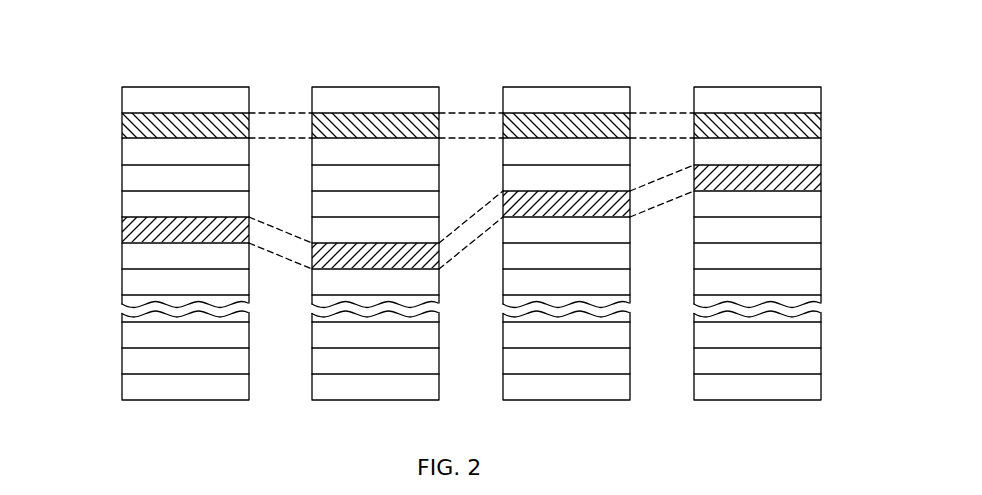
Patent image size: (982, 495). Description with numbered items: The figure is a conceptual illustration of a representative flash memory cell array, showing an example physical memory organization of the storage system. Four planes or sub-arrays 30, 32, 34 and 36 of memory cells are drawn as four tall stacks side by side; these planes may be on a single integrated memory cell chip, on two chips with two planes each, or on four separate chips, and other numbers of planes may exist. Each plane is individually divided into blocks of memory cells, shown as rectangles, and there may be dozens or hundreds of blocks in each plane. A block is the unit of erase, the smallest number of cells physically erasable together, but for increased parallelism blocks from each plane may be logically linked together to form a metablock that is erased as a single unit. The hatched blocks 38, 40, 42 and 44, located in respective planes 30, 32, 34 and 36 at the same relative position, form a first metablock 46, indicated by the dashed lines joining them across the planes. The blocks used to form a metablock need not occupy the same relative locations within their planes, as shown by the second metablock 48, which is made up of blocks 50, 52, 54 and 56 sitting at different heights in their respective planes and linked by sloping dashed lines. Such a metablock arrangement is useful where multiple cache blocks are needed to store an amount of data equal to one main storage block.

The plane 30 is at (183, 80).
The plane 32 is at (378, 80).
The plane 34 is at (567, 82).
The plane 36 is at (793, 88).
The block 38 is at (153, 125).
The block 40 is at (355, 130).
The block 42 is at (547, 130).
The block 44 is at (787, 127).
The first metablock 46 is at (662, 112).
The second metablock 48 is at (665, 177).
The block 50 is at (160, 230).
The block 52 is at (345, 260).
The block 54 is at (555, 203).
The block 56 is at (797, 180).